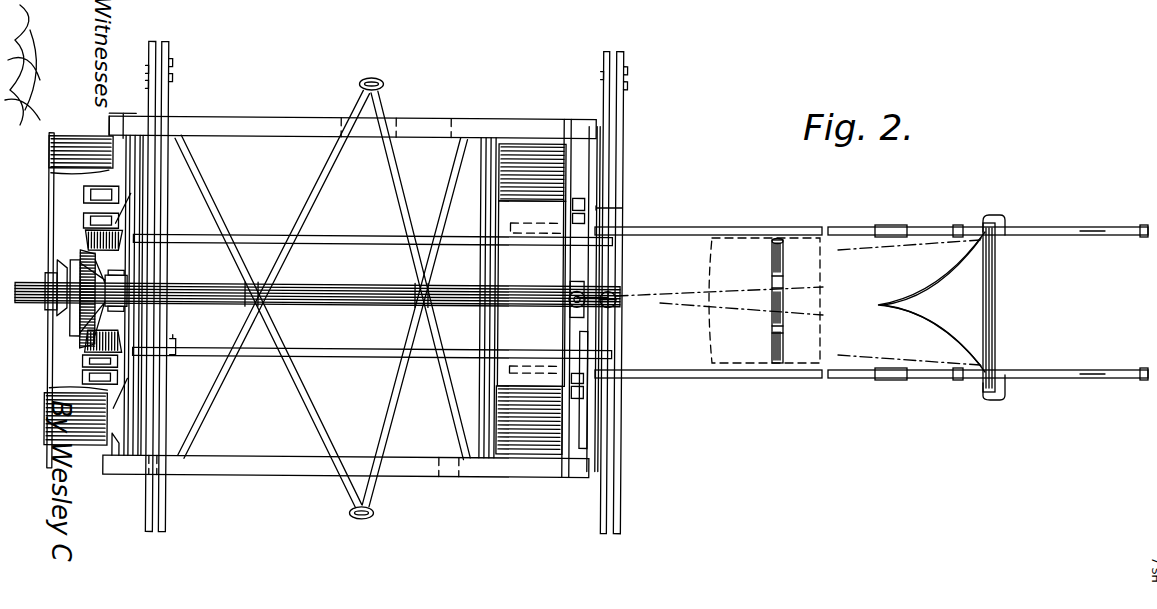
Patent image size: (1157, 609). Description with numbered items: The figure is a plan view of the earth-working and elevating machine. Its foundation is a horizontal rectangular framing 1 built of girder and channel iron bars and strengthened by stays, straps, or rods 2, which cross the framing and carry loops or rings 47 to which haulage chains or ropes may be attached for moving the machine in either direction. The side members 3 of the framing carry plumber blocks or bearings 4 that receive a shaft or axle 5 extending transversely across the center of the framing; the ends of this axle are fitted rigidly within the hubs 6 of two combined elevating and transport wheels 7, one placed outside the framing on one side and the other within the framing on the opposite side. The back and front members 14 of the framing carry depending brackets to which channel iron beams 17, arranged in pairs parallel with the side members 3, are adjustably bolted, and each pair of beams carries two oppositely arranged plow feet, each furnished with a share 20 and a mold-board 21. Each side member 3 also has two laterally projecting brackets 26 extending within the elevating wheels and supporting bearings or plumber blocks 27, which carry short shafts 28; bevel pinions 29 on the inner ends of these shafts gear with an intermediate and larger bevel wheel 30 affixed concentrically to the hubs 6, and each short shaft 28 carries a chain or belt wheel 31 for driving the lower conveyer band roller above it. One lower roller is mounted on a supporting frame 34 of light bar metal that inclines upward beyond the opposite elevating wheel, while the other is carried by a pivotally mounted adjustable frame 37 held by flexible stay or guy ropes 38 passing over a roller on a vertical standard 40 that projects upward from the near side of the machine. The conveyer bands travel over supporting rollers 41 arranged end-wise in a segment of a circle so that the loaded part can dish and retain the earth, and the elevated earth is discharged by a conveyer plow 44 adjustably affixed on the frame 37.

The horizontal rectangular framing 1 is at (465, 172).
The stays, straps, or rods 2 is at (398, 194).
The side members 3 is at (118, 442).
The plumber blocks or bearings 4 is at (127, 290).
The shaft or axle 5 is at (342, 286).
The hubs 6 is at (52, 280).
The combined elevating and transport wheels 7 is at (531, 293).
The back and front members 14 is at (226, 125).
The channel iron beams 17 is at (160, 44).
The share 20 is at (150, 118).
The mold-board 21 is at (140, 173).
The laterally projecting brackets 26 is at (88, 201).
The bearings or plumber blocks 27 is at (102, 197).
The short shafts 28 is at (73, 142).
The bevel pinions 29 is at (125, 234).
The bevel wheel 30 is at (80, 335).
The chain or belt wheel 31 is at (85, 215).
The supporting frame 34 is at (355, 244).
The pivotally mounted adjustable frame 37 is at (863, 232).
The flexible stay or guy ropes 38 is at (783, 315).
The vertical standard 40 is at (622, 208).
The supporting rollers 41 is at (777, 240).
The conveyer plow 44 is at (932, 320).
The loops or rings 47 is at (376, 79).